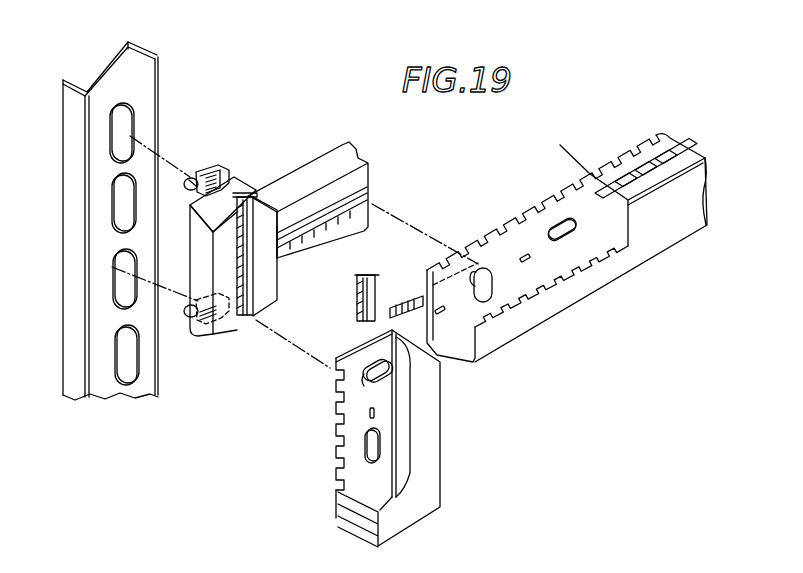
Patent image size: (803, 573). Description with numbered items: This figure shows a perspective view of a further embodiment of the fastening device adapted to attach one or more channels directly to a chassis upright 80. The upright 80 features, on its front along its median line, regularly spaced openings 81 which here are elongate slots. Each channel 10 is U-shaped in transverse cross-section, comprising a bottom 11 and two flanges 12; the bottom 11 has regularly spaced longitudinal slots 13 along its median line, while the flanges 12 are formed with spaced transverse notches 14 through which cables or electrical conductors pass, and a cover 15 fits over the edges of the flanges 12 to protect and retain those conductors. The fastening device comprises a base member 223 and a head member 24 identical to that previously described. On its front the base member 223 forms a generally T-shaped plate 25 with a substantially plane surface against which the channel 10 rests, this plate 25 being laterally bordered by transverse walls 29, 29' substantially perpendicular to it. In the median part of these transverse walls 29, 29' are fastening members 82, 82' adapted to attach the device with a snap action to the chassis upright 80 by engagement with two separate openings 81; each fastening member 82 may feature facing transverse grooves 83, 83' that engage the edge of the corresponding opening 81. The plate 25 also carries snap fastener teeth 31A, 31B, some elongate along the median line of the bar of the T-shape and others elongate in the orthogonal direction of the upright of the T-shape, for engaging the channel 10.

The chassis upright 80 is at (164, 61).
The openings 81 is at (117, 115).
The fastening member 82 is at (200, 329).
The transverse groove 83 is at (179, 279).
The fastening member 82' is at (219, 157).
The transverse groove 83' is at (182, 159).
The plate 25 is at (275, 212).
The transverse wall 29 is at (284, 303).
The transverse wall 29' is at (260, 213).
The base member 223 is at (314, 152).
The snap fastener tooth 31A is at (372, 188).
The snap fastener tooth 31B is at (372, 201).
The head member 24 is at (414, 288).
The channel 10 is at (623, 134).
The bottom 11 is at (606, 237).
The flange 12 is at (676, 139).
The longitudinal slot 13 is at (493, 273).
The transverse notch 14 is at (688, 158).
The cover 15 is at (690, 221).